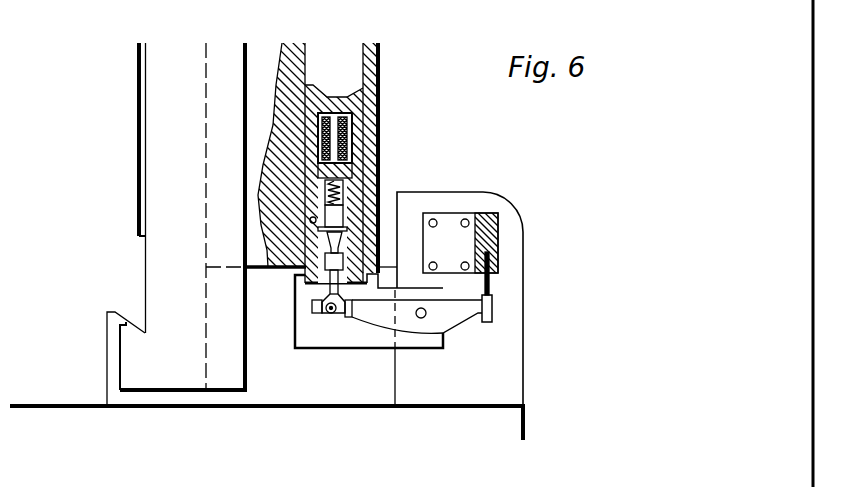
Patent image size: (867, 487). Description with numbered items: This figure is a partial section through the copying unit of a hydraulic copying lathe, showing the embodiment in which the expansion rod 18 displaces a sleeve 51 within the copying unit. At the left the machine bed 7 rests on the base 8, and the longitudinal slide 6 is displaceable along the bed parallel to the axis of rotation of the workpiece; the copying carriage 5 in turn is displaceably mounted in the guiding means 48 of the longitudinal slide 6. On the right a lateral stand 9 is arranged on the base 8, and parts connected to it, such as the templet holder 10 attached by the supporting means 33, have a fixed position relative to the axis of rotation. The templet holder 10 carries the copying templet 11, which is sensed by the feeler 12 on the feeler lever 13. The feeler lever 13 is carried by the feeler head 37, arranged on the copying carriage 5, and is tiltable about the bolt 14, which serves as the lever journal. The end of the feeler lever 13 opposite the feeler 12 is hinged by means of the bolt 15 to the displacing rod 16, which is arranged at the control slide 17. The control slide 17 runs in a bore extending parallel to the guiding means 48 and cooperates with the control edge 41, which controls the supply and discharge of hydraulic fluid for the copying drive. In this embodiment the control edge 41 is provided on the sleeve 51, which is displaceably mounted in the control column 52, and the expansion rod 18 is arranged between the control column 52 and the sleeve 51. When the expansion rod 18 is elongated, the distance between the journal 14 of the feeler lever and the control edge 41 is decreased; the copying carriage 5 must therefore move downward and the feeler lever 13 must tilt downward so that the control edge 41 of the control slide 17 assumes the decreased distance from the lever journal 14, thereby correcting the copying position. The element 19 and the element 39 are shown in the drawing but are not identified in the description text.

The copying carriage 5 is at (268, 110).
The longitudinal slide 6 is at (187, 110).
The machine bed 7 is at (97, 110).
The base 8 is at (246, 433).
The lateral stand 9 is at (430, 393).
The templet holder 10 is at (490, 223).
The copying templet 11 is at (490, 283).
The feeler 12 is at (490, 303).
The feeler lever 13 is at (450, 320).
The bolt 14 is at (425, 318).
The bolt 15 is at (318, 311).
The displacing rod 16 is at (328, 262).
The control slide 17 is at (325, 243).
The expansion rod 18 is at (338, 133).
The coil core 19 is at (347, 153).
The supporting means 33 is at (447, 227).
The feeler head 37 is at (320, 338).
The return spring 39 is at (343, 191).
The control edge 41 is at (320, 218).
The guiding means 48 is at (207, 139).
The sleeve 51 is at (350, 173).
The control column 52 is at (327, 107).